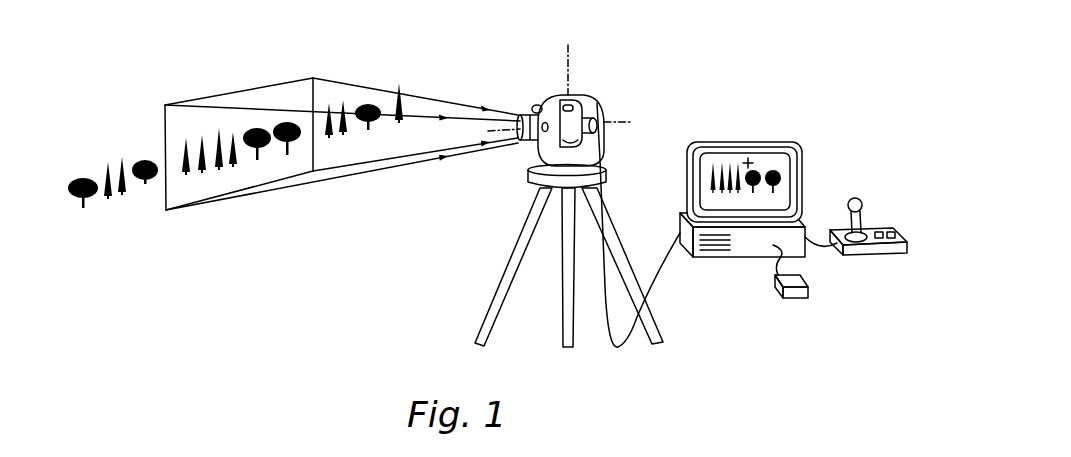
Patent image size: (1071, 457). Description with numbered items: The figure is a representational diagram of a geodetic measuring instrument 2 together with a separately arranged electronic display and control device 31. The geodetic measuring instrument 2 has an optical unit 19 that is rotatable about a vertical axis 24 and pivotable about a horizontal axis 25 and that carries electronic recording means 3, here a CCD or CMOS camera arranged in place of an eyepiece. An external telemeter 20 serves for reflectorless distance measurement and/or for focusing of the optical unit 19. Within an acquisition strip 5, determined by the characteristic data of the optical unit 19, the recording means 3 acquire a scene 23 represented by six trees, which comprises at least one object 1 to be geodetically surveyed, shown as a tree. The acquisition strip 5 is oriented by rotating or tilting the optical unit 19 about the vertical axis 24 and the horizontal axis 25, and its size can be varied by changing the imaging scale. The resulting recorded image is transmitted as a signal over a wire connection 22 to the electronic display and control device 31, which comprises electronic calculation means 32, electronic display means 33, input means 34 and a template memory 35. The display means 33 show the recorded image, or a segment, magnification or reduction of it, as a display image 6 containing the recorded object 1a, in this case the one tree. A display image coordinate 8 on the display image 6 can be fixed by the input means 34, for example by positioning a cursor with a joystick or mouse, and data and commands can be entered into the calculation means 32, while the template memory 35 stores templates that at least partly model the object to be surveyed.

The object to be geodetically surveyed 1 is at (233, 133).
The recorded object 1a is at (738, 160).
The geodetic measuring instrument 2 is at (576, 180).
The electronic recording means 3 is at (597, 117).
The acquisition strip 5 is at (297, 78).
The display image 6 is at (713, 158).
The display image coordinate 8 is at (748, 160).
The optical unit 19 is at (525, 115).
The external telemeter 20 is at (530, 118).
The wire connection 22 is at (623, 340).
The scene 23 is at (200, 117).
The vertical axis 24 is at (568, 45).
The horizontal axis 25 is at (620, 118).
The electronic display and control device 31 is at (793, 202).
The electronic calculation means 32 is at (753, 245).
The electronic display means 33 is at (784, 154).
The input means 34 is at (858, 250).
The template memory 35 is at (795, 297).